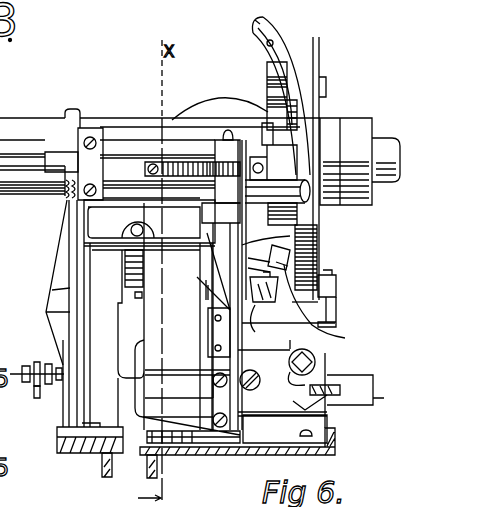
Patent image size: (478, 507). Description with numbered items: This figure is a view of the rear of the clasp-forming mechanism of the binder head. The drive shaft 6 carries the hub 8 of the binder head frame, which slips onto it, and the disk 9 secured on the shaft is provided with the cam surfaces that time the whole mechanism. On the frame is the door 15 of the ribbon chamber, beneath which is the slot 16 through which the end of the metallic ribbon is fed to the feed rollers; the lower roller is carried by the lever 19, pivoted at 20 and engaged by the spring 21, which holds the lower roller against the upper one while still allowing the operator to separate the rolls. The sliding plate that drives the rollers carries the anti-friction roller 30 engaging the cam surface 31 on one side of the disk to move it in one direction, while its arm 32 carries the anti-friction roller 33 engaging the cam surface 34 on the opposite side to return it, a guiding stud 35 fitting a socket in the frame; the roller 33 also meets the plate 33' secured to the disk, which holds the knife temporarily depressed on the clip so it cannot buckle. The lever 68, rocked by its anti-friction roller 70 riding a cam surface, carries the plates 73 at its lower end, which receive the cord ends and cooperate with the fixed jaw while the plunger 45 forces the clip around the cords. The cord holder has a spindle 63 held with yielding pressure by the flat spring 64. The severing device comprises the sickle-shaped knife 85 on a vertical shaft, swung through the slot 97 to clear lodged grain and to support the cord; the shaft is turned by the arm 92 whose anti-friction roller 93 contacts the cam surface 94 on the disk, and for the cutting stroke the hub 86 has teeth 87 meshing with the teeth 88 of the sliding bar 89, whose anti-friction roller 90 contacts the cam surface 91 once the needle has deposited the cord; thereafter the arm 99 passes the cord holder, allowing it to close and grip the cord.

The drive shaft 6 is at (393, 151).
The hub 8 is at (115, 127).
The disk 9 is at (290, 37).
The door 15 is at (149, 279).
The slot 16 is at (280, 447).
The lever 19 is at (318, 406).
The pivot 20 is at (254, 390).
The spring 21 is at (322, 374).
The anti-friction roller 30 is at (288, 310).
The cam surface 31 is at (253, 22).
The arm 32 is at (338, 311).
The anti-friction roller 33 is at (355, 285).
The plate 33' is at (348, 164).
The cam surface 34 is at (320, 270).
The guiding stud 35 is at (143, 277).
The plunger 45 is at (373, 400).
The spindle 63 is at (63, 373).
The flat spring 64 is at (40, 392).
The lever 68 is at (290, 236).
The anti-friction roller 70 is at (320, 330).
The plates 73 is at (58, 330).
The sickle-shaped knife 85 is at (184, 440).
The hub 86 is at (240, 148).
The teeth 87 is at (212, 165).
The teeth 88 is at (160, 162).
The sliding bar 89 is at (52, 188).
The anti-friction roller 90 is at (303, 132).
The cam surface 91 is at (277, 163).
The arm 92 is at (322, 165).
The anti-friction roller 93 is at (300, 197).
The cam surface 94 is at (302, 166).
The slot 97 is at (118, 470).
The arm 99 is at (22, 123).